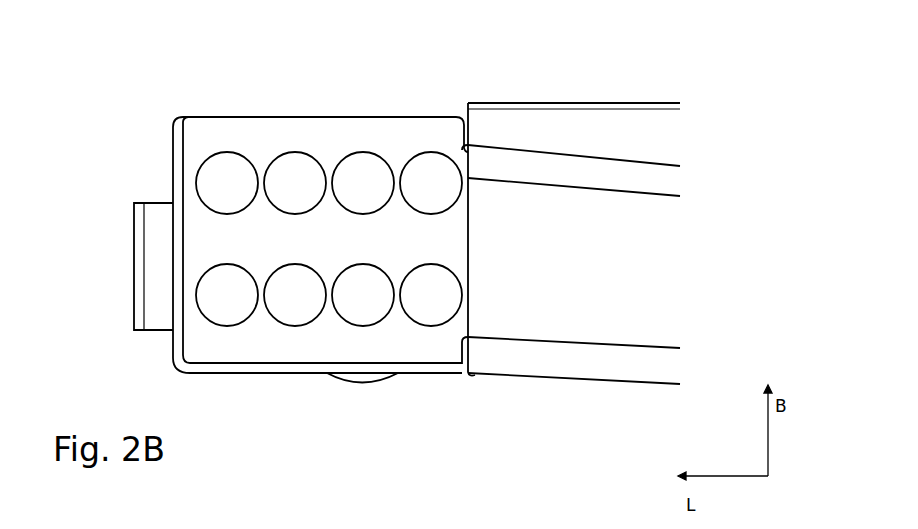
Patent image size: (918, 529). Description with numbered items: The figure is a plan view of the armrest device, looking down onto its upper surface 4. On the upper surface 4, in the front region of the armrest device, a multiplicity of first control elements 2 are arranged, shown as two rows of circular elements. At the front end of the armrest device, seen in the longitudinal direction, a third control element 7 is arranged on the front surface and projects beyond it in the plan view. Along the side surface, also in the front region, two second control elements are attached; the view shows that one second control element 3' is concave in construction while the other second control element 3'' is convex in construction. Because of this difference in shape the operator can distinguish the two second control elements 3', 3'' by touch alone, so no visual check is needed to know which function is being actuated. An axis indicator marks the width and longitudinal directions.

The first control element 2 is at (228, 158).
The upper surface 4 is at (396, 132).
The third control element 7 is at (152, 284).
The second control element 3' is at (265, 417).
The second control element 3'' is at (362, 423).